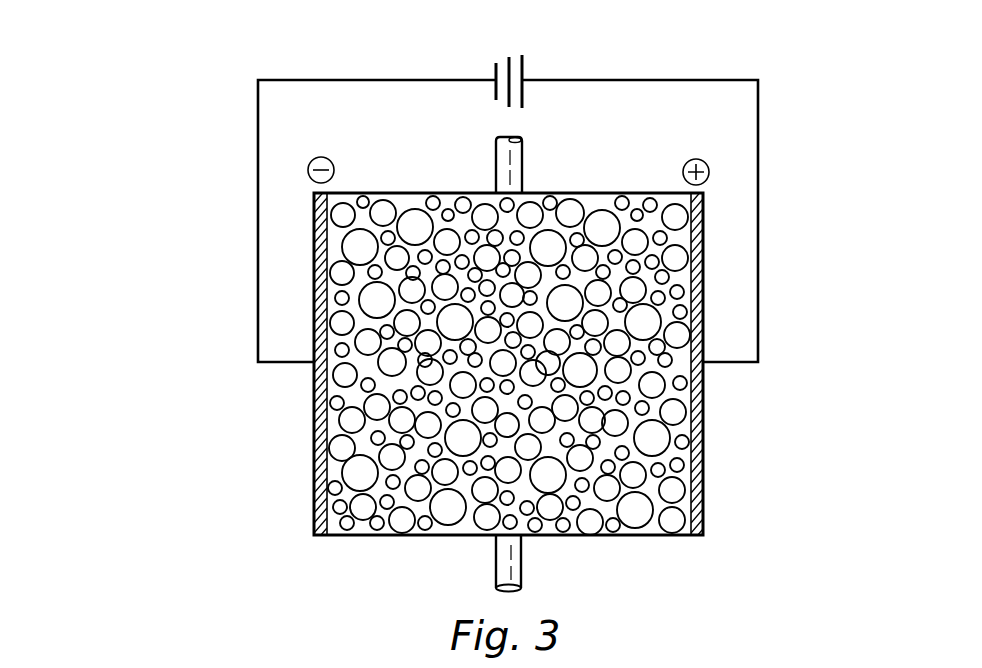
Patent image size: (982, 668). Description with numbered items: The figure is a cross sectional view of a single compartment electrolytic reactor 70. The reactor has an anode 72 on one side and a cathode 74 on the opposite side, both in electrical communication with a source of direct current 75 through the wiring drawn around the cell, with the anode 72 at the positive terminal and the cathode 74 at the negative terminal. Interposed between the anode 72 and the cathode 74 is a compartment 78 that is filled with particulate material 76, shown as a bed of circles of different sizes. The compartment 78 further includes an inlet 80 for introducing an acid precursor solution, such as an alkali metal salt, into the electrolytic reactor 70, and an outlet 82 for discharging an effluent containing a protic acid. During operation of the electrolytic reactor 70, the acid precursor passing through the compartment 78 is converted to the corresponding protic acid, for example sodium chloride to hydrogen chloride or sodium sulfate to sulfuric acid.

The single compartment electrolytic reactor 70 is at (218, 481).
The anode 72 is at (703, 450).
The cathode 74 is at (314, 447).
The source of direct current 75 is at (522, 67).
The particulate material 76 is at (532, 212).
The compartment 78 is at (456, 495).
The inlet 80 is at (521, 553).
The outlet 82 is at (497, 175).